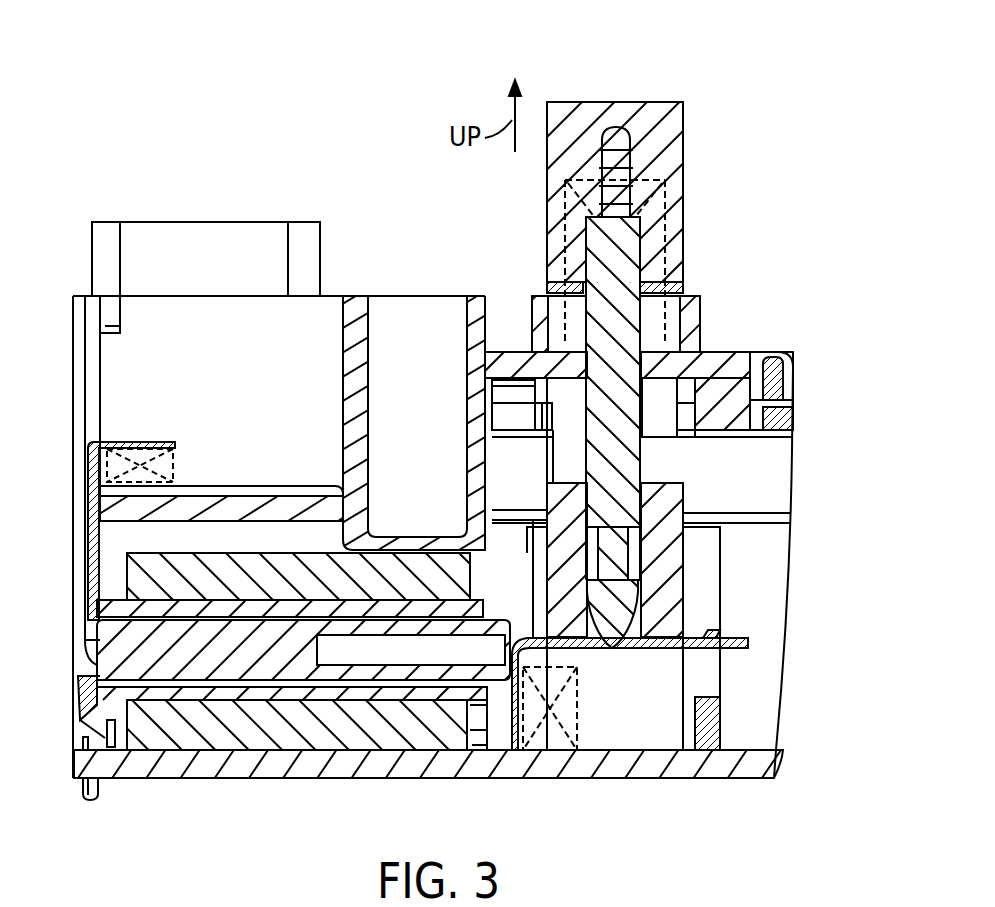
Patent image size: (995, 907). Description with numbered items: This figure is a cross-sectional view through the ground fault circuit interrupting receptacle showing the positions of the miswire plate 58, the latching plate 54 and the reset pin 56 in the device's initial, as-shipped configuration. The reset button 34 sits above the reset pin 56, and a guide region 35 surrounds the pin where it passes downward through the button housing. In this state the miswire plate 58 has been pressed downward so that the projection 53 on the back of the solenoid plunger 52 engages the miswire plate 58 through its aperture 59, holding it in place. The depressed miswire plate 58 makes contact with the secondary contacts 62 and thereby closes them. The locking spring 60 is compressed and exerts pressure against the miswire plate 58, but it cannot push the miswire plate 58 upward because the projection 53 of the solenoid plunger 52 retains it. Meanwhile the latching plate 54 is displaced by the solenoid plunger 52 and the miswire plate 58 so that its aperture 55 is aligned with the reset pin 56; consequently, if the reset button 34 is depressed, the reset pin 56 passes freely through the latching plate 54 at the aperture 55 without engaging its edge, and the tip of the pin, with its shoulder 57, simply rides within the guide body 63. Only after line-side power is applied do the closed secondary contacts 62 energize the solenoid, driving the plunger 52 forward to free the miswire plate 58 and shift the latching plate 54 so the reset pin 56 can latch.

The reset button 34 is at (668, 102).
The button guide 35 is at (672, 235).
The solenoid plunger 52 is at (72, 637).
The projection 53 is at (543, 752).
The latching plate 54 is at (748, 643).
The aperture 55 is at (597, 648).
The reset pin 56 is at (627, 435).
The pin shoulder 57 is at (642, 557).
The miswire plate 58 is at (150, 430).
The aperture 59 is at (80, 650).
The locking spring 60 is at (180, 467).
The secondary contacts 62 is at (68, 730).
The pin guide 63 is at (685, 497).